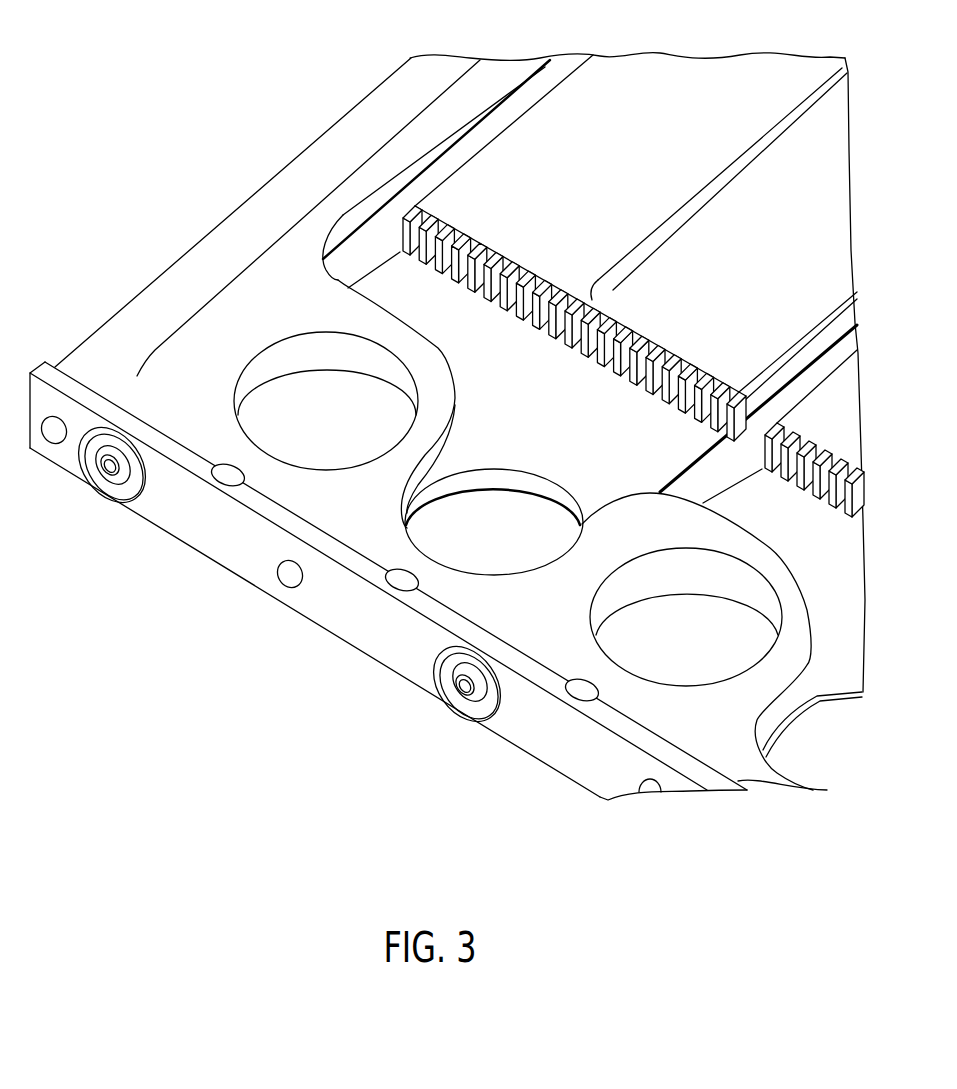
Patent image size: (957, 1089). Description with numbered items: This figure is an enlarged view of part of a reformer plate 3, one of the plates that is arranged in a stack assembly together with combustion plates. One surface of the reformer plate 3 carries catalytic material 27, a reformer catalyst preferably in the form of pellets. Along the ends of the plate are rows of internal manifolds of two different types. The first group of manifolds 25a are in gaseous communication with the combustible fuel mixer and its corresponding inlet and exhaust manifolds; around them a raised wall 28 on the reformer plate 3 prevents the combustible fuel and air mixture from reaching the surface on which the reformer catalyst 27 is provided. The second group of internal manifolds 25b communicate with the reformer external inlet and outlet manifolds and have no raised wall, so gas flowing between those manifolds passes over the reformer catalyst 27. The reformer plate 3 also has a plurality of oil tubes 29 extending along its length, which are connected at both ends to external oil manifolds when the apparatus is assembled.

The reformer plate 3 is at (327, 131).
The catalytic material 27 is at (832, 250).
The oil tubes 29 is at (348, 263).
The raised wall 28 is at (425, 365).
The first group of manifolds 25a is at (282, 402).
The second group of internal manifolds 25b is at (510, 507).